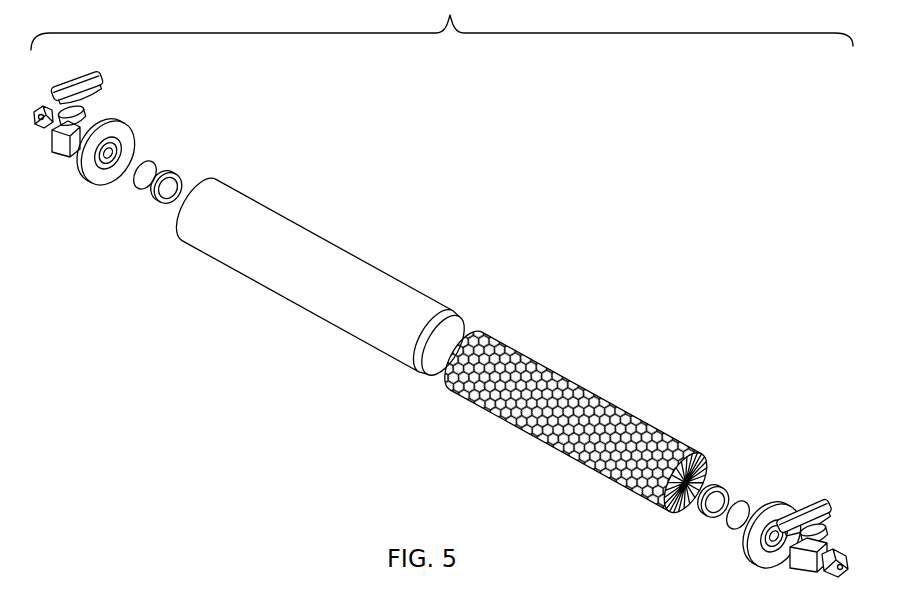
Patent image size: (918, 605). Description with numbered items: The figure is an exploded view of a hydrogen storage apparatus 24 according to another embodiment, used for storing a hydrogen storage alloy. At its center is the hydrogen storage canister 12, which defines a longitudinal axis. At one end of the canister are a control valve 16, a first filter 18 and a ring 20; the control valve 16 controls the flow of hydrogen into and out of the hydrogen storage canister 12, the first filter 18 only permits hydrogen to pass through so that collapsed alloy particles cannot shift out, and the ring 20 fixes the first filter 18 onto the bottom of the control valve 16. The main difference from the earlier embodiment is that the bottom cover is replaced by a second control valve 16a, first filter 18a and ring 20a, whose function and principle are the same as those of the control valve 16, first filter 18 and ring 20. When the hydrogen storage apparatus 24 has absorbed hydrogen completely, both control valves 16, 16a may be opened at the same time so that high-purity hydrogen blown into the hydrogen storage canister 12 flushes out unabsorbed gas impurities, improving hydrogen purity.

The hydrogen storage canister 12 is at (388, 272).
The control valve 16 is at (833, 543).
The control valve 16a is at (68, 156).
The first filter 18 is at (745, 497).
The first filter 18a is at (153, 161).
The ring 20 is at (718, 482).
The ring 20a is at (163, 207).
The hydrogen storage apparatus 24 is at (428, 96).